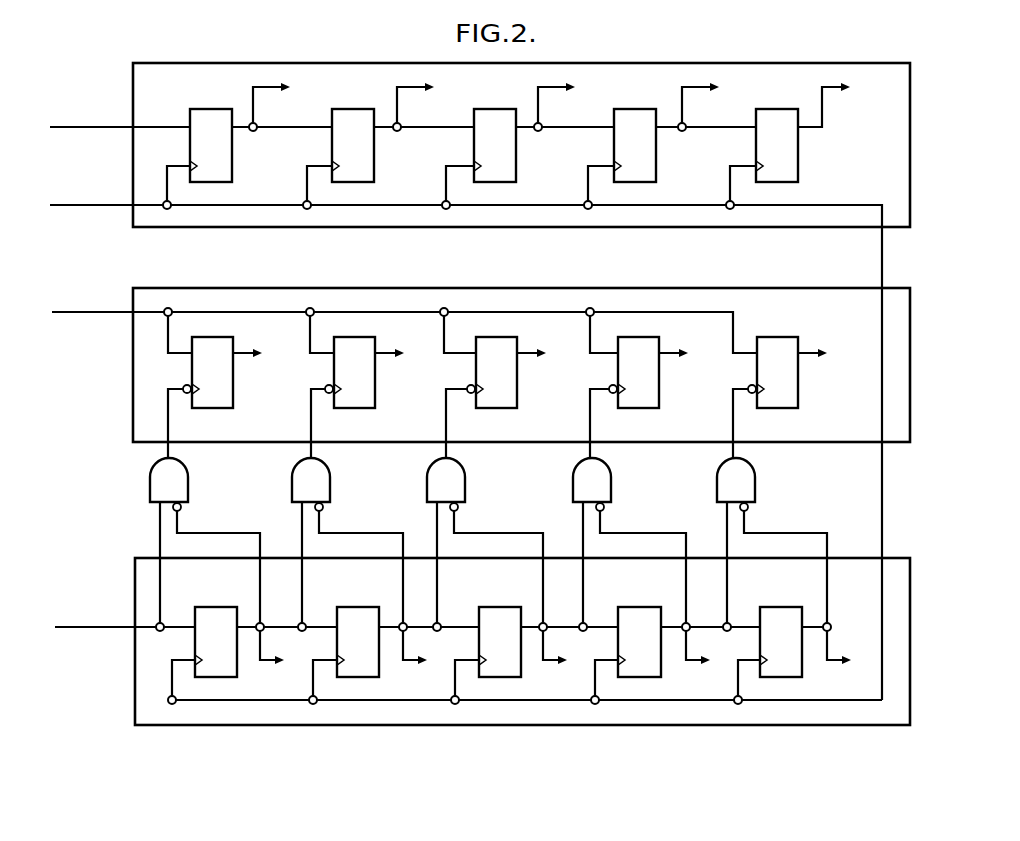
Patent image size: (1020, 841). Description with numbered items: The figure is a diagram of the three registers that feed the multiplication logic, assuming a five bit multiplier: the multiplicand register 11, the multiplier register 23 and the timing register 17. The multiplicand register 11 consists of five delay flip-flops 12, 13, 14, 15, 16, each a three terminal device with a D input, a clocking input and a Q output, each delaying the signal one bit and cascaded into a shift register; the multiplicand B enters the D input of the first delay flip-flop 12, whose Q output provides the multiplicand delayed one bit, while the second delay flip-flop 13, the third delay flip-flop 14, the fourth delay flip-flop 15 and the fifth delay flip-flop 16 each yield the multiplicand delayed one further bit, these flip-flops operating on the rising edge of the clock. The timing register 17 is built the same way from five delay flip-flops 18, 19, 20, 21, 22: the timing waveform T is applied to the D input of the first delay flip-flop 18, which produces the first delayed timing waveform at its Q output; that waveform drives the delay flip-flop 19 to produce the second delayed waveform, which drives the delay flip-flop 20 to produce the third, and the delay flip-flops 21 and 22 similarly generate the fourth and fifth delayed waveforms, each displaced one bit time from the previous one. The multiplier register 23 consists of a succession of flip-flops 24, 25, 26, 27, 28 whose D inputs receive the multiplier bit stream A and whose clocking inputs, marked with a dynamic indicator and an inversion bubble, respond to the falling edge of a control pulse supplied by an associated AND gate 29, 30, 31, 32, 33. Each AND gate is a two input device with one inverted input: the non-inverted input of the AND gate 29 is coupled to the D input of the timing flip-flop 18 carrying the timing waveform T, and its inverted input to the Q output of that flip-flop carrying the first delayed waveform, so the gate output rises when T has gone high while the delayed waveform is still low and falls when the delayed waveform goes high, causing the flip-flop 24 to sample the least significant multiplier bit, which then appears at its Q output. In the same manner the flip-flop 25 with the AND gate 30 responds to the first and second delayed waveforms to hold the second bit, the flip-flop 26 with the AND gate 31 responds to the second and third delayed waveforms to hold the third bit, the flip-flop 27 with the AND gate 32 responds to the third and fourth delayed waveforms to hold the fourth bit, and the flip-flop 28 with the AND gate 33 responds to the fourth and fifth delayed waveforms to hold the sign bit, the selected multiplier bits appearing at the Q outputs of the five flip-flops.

The multiplicand register 11 is at (349, 50).
The delay flip-flop 12 is at (212, 108).
The delay flip-flop 13 is at (354, 108).
The delay flip-flop 14 is at (496, 108).
The delay flip-flop 15 is at (636, 108).
The delay flip-flop 16 is at (778, 108).
The timing register 17 is at (135, 570).
The delay flip-flop 18 is at (215, 607).
The delay flip-flop 19 is at (355, 607).
The delay flip-flop 20 is at (498, 607).
The delay flip-flop 21 is at (635, 607).
The delay flip-flop 22 is at (779, 607).
The multiplier register 23 is at (335, 278).
The flip-flop 24 is at (233, 406).
The flip-flop 25 is at (375, 406).
The flip-flop 26 is at (517, 406).
The flip-flop 27 is at (659, 406).
The flip-flop 28 is at (798, 406).
The AND gate 29 is at (188, 492).
The AND gate 30 is at (330, 492).
The AND gate 31 is at (465, 492).
The AND gate 32 is at (611, 492).
The AND gate 33 is at (755, 492).